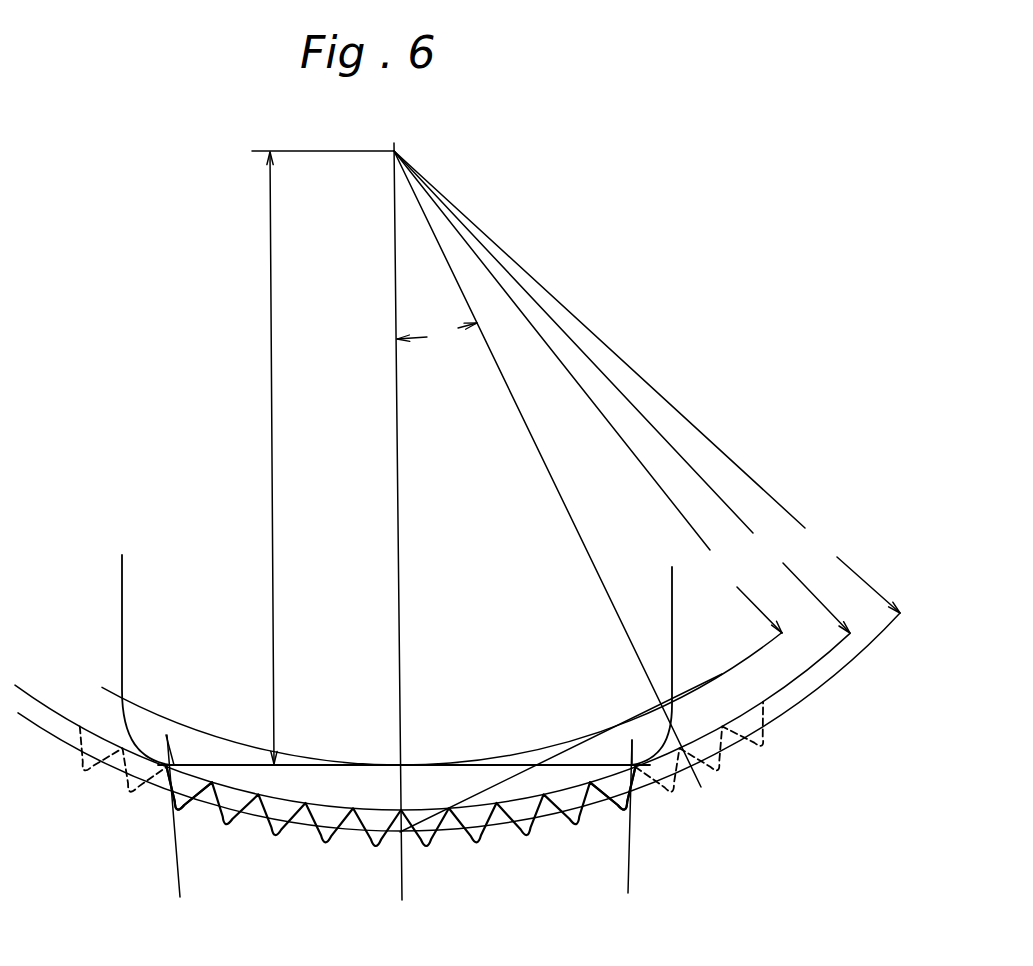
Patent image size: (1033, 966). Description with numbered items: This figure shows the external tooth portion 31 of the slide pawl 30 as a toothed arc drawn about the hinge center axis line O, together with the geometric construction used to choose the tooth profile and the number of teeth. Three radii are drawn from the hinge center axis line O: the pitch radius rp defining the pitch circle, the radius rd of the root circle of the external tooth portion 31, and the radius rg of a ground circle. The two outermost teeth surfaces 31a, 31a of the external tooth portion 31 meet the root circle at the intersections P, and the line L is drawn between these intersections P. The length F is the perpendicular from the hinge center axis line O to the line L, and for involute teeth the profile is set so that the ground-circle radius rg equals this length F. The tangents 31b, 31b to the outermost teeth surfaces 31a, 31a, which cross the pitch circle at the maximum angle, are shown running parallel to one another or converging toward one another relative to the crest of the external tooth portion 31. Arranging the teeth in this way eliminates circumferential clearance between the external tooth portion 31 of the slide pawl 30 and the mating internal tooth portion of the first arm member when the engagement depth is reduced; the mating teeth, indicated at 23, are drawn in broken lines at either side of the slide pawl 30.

The slide pawl 30 is at (122, 592).
The pinion gear 23 is at (80, 712).
The external tooth portion 31 is at (580, 812).
The outermost teeth surfaces 31a is at (172, 792).
The tangents 31b is at (180, 881).
The hinge center axis line O is at (395, 152).
The length of perpendicular line F is at (270, 458).
The line between intersections L is at (296, 766).
The intersections P is at (172, 764).
The radius of ground circle rg is at (442, 458).
The radius of root circle rd is at (432, 480).
The pitch radius rp is at (459, 491).